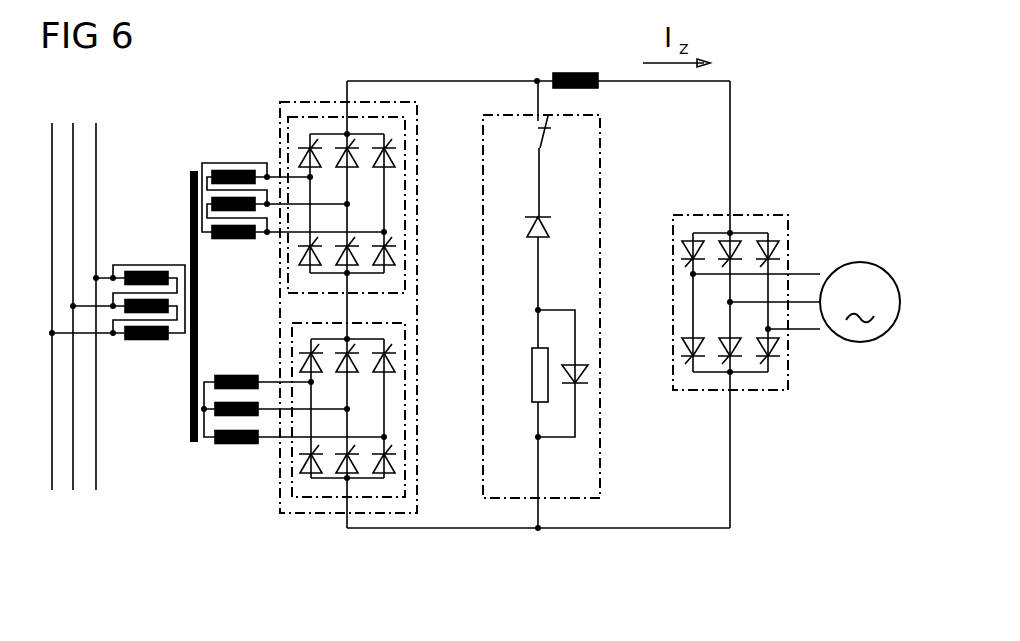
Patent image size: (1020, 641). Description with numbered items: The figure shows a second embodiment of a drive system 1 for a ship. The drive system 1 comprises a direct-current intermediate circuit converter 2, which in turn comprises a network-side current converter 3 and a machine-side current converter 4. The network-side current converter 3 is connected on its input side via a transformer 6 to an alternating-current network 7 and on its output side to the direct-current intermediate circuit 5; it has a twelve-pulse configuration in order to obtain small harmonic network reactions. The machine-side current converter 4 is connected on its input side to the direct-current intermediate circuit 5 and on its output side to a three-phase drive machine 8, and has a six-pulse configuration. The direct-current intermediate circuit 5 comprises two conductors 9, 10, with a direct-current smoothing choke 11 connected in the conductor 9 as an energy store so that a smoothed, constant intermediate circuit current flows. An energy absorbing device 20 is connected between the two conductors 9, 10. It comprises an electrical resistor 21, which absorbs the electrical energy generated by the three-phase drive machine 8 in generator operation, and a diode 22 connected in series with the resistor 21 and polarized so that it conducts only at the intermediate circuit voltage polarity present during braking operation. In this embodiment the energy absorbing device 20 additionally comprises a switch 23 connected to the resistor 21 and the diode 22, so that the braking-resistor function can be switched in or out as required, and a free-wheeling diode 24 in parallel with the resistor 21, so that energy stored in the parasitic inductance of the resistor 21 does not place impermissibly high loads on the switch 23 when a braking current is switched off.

The drive system 1 is at (753, 100).
The direct-current intermediate circuit converter 2 is at (762, 508).
The network-side current converter 3 is at (306, 101).
The machine-side current converter 4 is at (757, 213).
The direct-current intermediate circuit 5 is at (482, 546).
The transformer 6 is at (189, 405).
The alternating-current network 7 is at (97, 470).
The three-phase drive machine 8 is at (856, 262).
The conductor 9 is at (631, 79).
The conductor 10 is at (563, 530).
The direct-current smoothing choke 11 is at (577, 72).
The energy absorbing device 20 is at (577, 306).
The electrical resistor 21 is at (537, 346).
The diode 22 is at (552, 224).
The switch 23 is at (545, 142).
The free-wheeling diode 24 is at (590, 372).